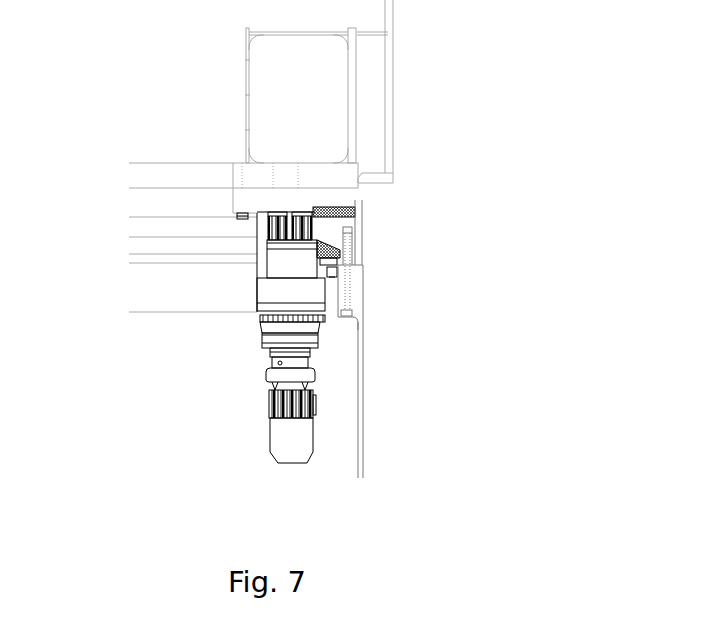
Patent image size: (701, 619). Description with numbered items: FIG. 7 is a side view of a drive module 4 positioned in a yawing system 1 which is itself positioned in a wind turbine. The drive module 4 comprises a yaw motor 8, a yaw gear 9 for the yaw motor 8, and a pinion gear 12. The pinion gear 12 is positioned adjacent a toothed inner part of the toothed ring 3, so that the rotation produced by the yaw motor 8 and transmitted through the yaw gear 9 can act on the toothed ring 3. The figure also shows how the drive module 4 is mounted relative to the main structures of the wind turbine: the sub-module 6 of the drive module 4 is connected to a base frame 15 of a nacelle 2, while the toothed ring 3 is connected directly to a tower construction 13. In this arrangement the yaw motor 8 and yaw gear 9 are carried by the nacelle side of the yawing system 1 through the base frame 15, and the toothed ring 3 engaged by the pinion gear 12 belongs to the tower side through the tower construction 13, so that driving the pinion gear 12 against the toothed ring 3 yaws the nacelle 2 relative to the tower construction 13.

The yawing system 1 is at (388, 235).
The nacelle 2 is at (392, 90).
The toothed ring 3 is at (353, 235).
The drive module 4 is at (332, 296).
The sub-module 6 is at (249, 212).
The yaw motor 8 is at (280, 438).
The yaw gear 9 is at (275, 303).
The pinion gear 12 is at (293, 228).
The tower construction 13 is at (362, 430).
The base frame 15 is at (335, 178).